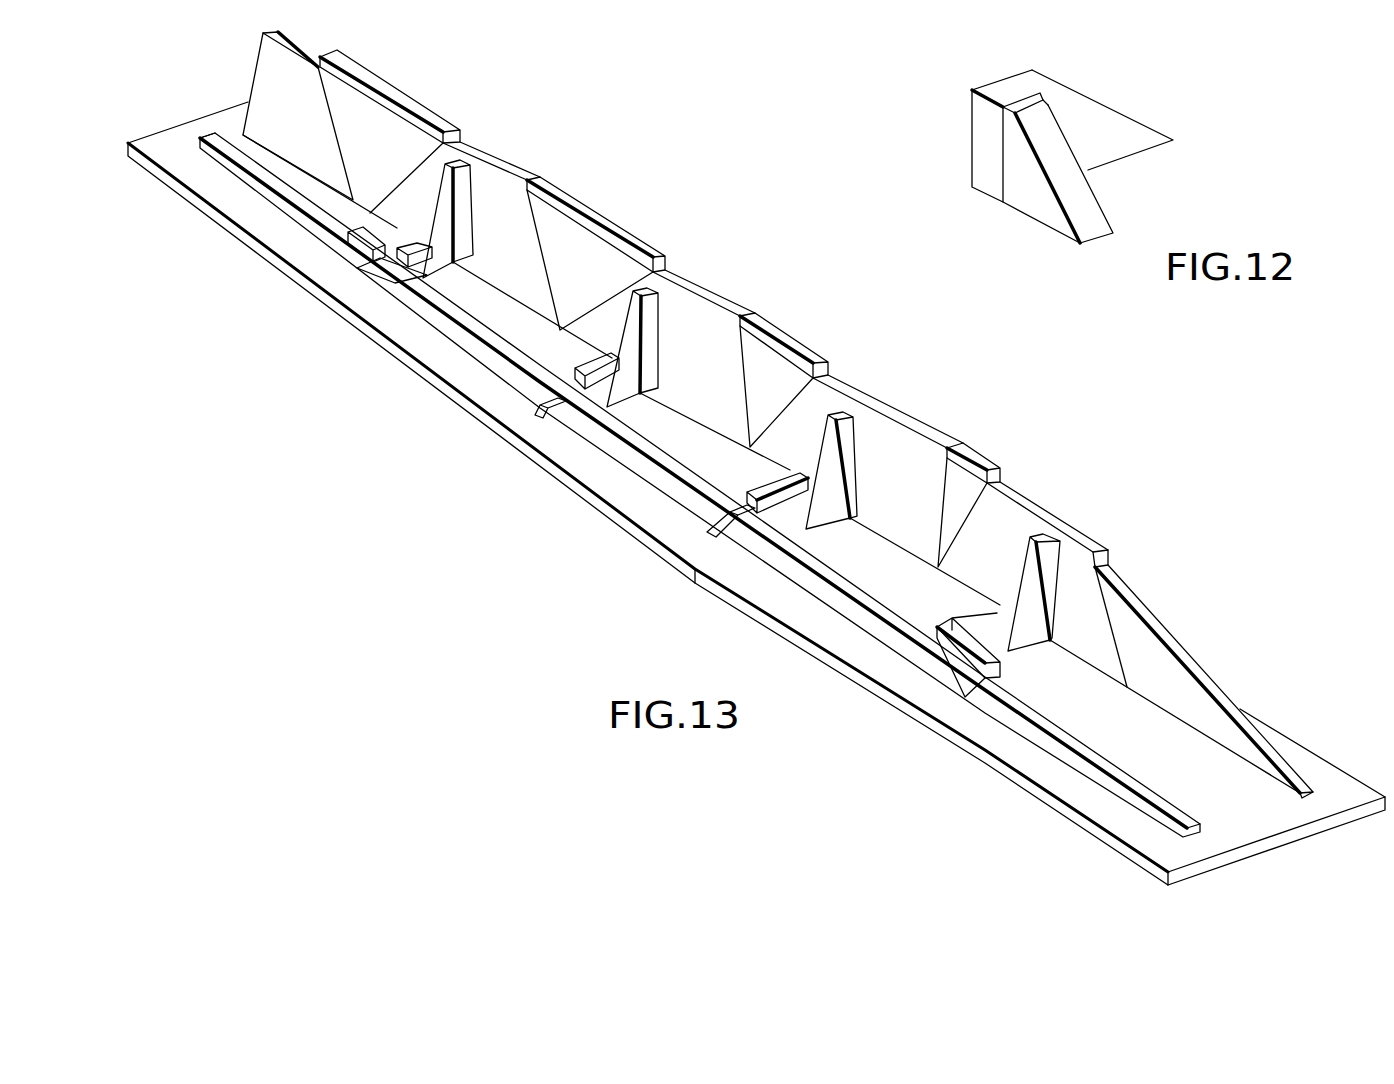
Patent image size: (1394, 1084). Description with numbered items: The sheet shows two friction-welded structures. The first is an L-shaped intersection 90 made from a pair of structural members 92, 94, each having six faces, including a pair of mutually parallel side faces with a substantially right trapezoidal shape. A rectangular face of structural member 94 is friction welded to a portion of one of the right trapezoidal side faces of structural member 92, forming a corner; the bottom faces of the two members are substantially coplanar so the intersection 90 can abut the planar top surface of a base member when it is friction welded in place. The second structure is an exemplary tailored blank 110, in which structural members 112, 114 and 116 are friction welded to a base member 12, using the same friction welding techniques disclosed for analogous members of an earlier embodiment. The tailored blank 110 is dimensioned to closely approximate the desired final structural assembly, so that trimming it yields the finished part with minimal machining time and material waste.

In FIG. 12, the L-shaped intersection 90 is at (1024, 165).
In FIG. 12, the structural member 92 is at (1095, 97).
In FIG. 12, the structural member 94 is at (1028, 195).
In FIG. 13, the base member 12 is at (1280, 838).
In FIG. 13, the tailored blank 110 is at (756, 459).
In FIG. 13, the structural member 112 is at (857, 400).
In FIG. 13, the structural member 114 is at (840, 470).
In FIG. 13, the structural member 116 is at (757, 480).